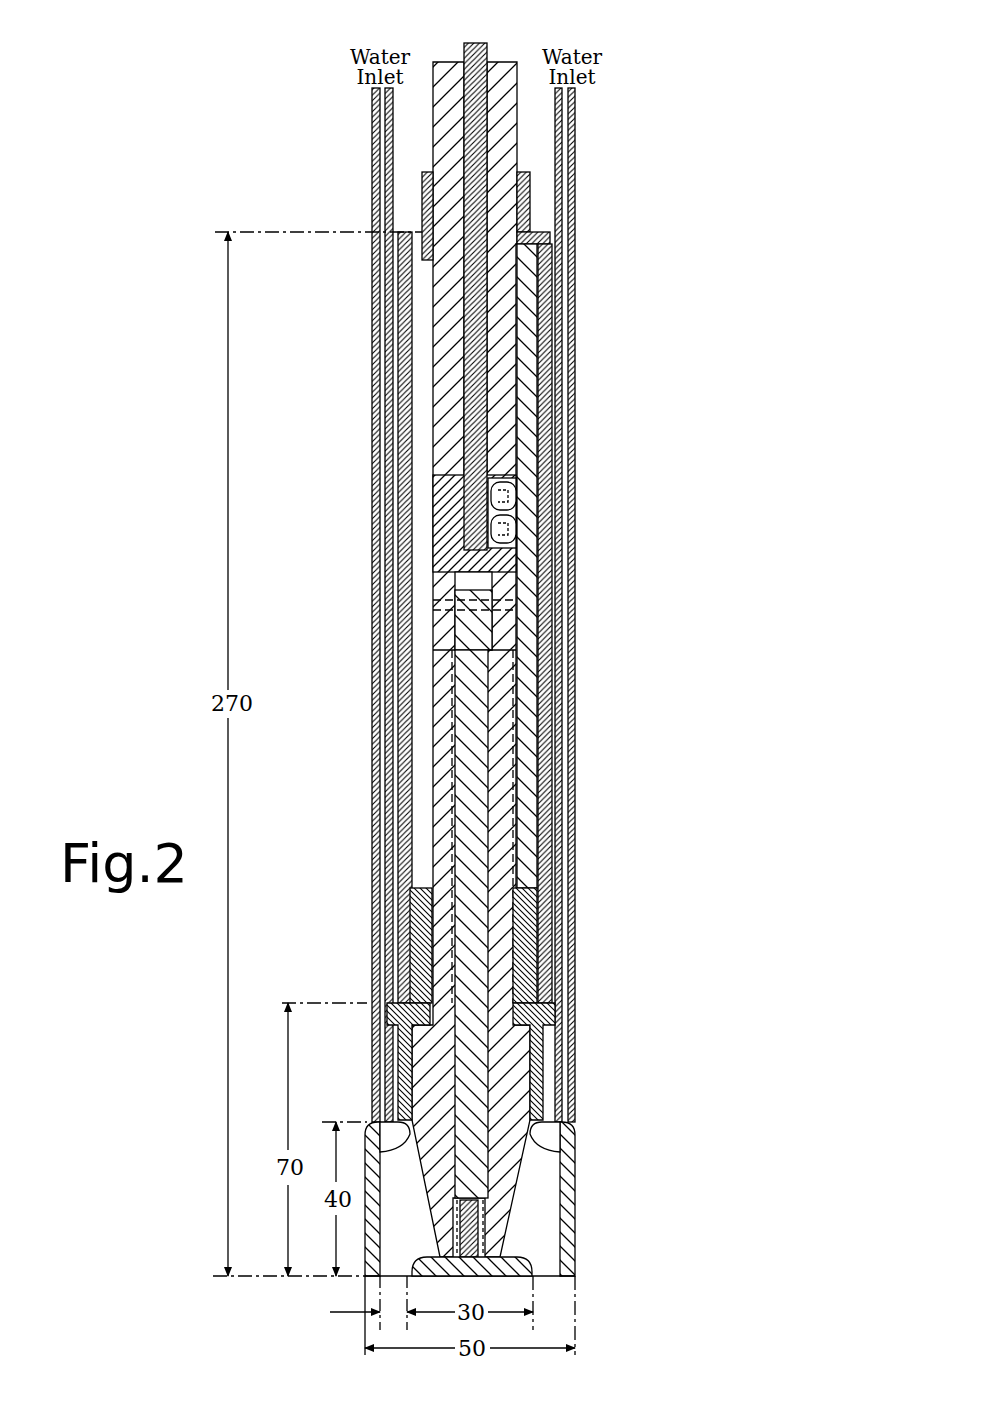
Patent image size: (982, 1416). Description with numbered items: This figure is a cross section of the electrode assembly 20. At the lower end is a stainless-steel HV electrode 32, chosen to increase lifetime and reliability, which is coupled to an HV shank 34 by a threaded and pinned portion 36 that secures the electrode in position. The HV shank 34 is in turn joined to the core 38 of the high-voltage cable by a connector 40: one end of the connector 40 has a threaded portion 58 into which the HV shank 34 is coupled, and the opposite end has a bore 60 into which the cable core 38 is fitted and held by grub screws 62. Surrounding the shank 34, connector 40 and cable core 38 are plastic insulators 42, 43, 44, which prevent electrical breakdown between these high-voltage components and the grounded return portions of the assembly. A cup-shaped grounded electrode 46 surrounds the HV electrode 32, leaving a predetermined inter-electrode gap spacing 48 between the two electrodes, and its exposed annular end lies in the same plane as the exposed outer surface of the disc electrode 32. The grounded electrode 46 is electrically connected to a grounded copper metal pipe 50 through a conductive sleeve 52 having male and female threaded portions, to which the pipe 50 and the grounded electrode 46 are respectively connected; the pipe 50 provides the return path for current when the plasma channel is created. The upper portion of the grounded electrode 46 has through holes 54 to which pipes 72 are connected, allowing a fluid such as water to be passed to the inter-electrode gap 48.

The electrode assembly 20 is at (658, 590).
The HV electrode 32 is at (515, 1280).
The HV shank 34 is at (477, 832).
The threaded and pinned portion 36 is at (478, 1218).
The core 38 is at (477, 43).
The connector 40 is at (540, 556).
The plastic insulator 42 is at (507, 1040).
The plastic insulator 43 is at (540, 307).
The plastic insulator 44 is at (517, 62).
The grounded electrode 46 is at (575, 1262).
The inter-electrode gap spacing 48 is at (392, 1312).
The grounded metal tube or pipe 50 is at (550, 365).
The conductive sleeve 52 is at (522, 948).
The through holes 54 is at (372, 1125).
The threaded portion 58 is at (445, 628).
The bore 60 is at (440, 512).
The grub screws 62 is at (540, 506).
The pipes 72 is at (578, 135).